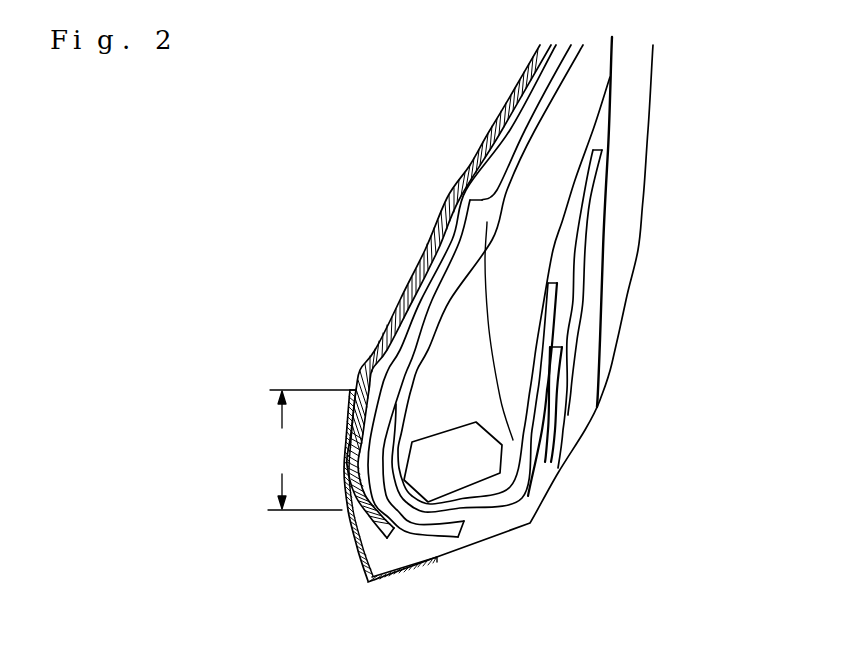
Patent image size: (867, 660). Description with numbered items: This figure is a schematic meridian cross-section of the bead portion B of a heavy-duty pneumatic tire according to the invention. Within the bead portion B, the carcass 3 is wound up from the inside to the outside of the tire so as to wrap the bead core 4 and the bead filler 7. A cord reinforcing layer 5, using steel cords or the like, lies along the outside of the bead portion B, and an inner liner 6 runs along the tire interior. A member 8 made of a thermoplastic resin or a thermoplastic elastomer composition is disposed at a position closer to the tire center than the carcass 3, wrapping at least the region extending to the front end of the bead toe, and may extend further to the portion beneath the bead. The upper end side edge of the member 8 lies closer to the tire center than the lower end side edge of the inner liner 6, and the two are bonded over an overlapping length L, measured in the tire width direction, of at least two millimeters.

The carcass 3 is at (511, 177).
The bead core 4 is at (473, 463).
The cord reinforcing layer 5 is at (418, 326).
The inner liner 6 is at (448, 193).
The bead filler 7 is at (462, 397).
The member of thermoplastic resin or thermoplastic elastomer composition 8 is at (356, 548).
The bead portion B is at (468, 151).
The length L is at (308, 450).